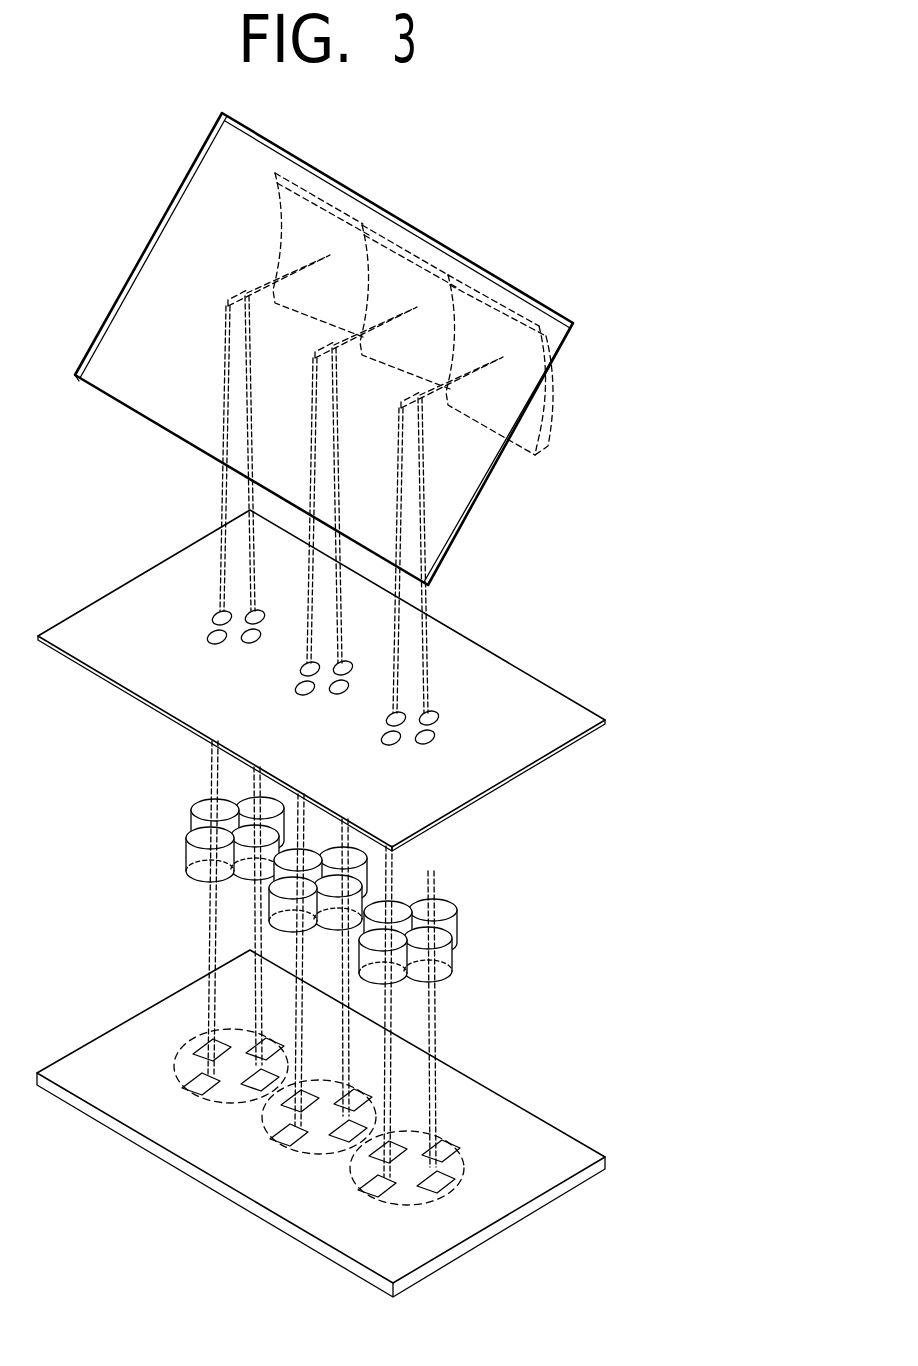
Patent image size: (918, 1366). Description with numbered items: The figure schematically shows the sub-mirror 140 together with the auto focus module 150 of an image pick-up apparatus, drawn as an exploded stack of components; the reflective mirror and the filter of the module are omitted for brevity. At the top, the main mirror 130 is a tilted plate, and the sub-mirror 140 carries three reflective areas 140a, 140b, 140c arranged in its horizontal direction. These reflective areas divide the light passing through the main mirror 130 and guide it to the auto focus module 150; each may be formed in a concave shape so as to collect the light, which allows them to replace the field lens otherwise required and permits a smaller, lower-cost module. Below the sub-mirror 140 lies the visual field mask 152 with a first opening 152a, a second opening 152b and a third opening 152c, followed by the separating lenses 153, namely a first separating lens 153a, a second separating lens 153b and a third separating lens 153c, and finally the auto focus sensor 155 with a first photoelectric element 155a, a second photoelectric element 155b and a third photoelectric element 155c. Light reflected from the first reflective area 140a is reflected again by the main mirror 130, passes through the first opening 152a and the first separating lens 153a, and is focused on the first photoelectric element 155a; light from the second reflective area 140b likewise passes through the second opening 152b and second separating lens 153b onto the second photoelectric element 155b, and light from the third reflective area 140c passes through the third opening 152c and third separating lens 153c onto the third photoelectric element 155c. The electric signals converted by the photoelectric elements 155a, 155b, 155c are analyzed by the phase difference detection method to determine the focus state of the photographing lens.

The main mirror 130 is at (488, 481).
The sub-mirror 140 is at (550, 230).
The first reflective area 140a is at (327, 212).
The second reflective area 140b is at (412, 265).
The third reflective area 140c is at (498, 313).
The auto focus module 150 is at (622, 797).
The visual field mask 152 is at (333, 680).
The first opening 152a is at (267, 606).
The second opening 152b is at (357, 652).
The third opening 152c is at (445, 713).
The separating lenses 153 is at (542, 838).
The first separating lens 153a is at (293, 797).
The second separating lens 153b is at (378, 863).
The third separating lens 153c is at (460, 930).
The auto focus sensor 155 is at (321, 1123).
The first photoelectric element 155a is at (178, 1095).
The second photoelectric element 155b is at (265, 1148).
The third photoelectric element 155c is at (353, 1193).